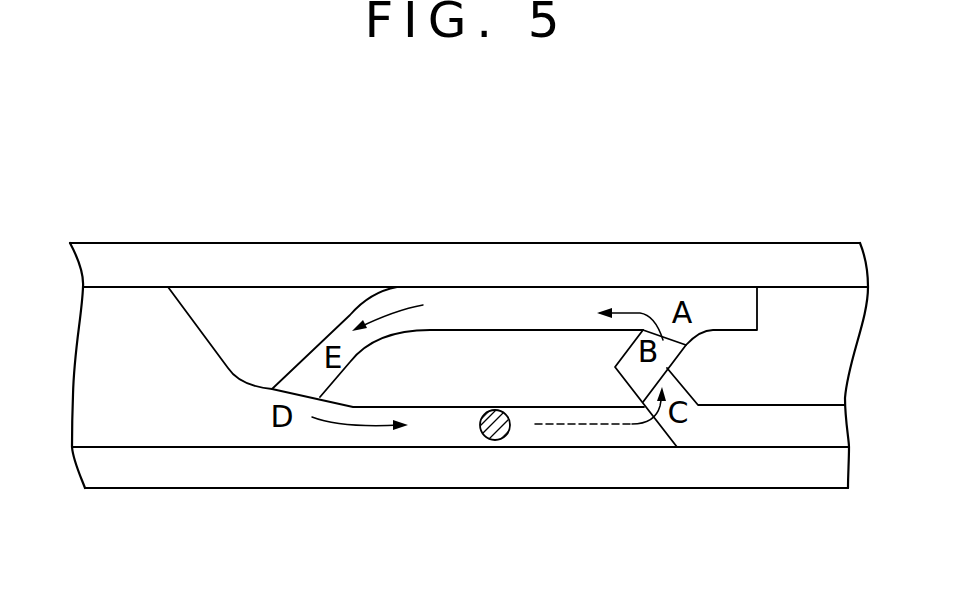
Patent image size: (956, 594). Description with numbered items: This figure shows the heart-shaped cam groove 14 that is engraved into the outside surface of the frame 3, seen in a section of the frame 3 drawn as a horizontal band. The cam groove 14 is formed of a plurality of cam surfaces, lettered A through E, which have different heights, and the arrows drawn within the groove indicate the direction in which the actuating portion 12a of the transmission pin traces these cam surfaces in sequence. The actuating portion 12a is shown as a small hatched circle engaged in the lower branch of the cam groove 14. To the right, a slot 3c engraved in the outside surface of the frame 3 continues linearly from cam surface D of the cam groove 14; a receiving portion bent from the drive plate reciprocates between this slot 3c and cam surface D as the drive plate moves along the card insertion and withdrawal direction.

The frame 3 is at (343, 243).
The heart-shaped cam groove 14 is at (525, 305).
The actuating portion 12a is at (490, 432).
The slot 3c is at (755, 430).